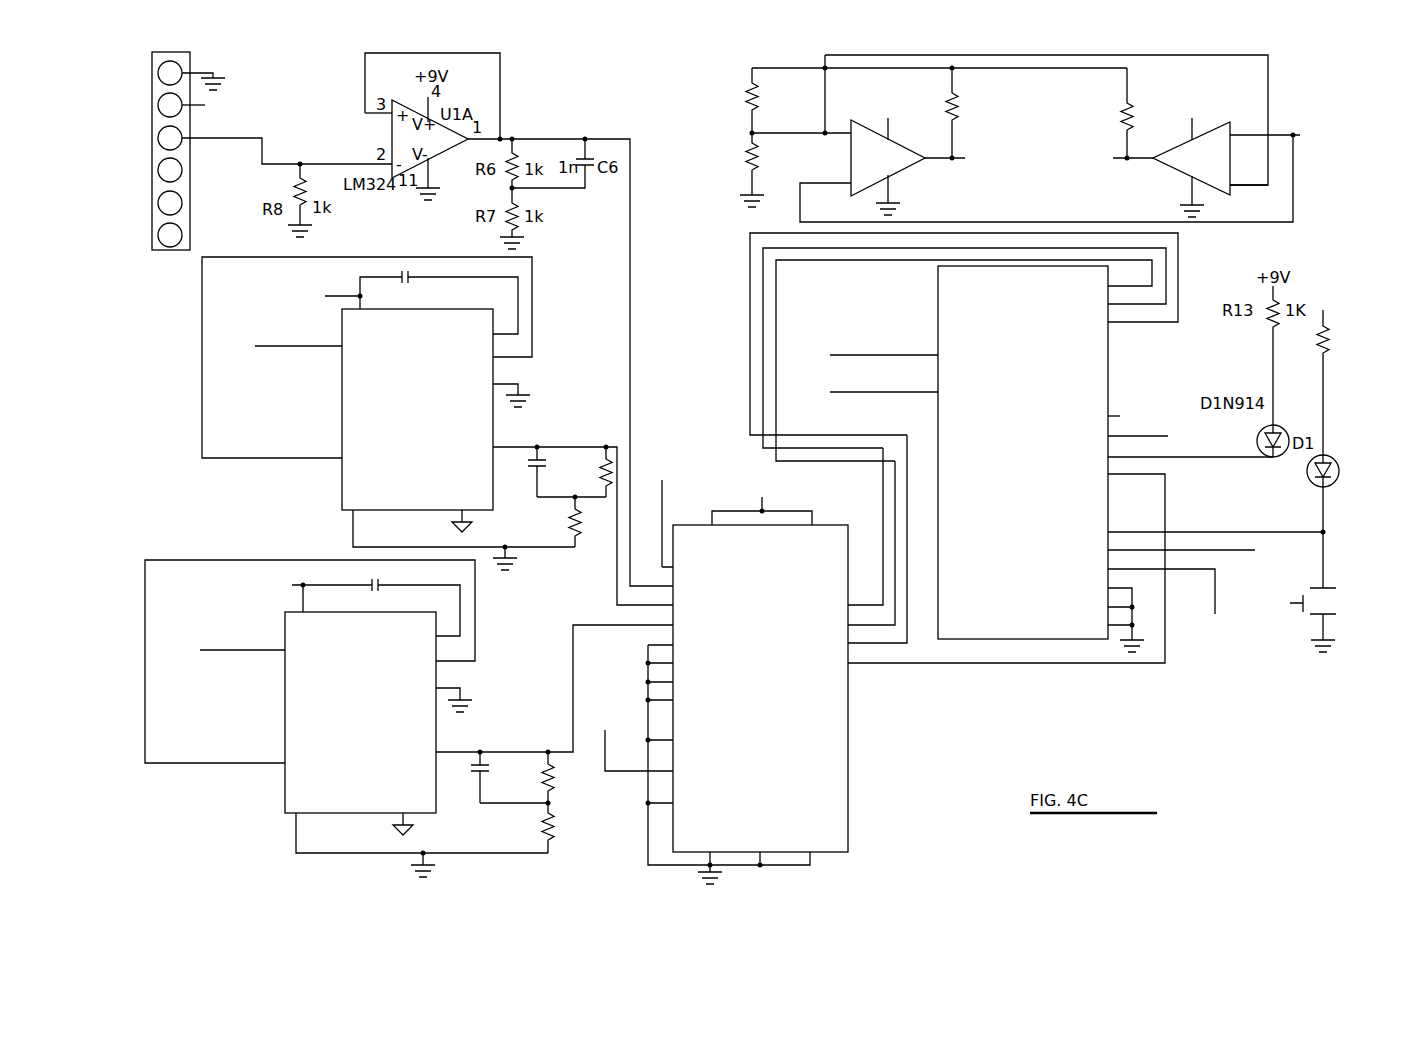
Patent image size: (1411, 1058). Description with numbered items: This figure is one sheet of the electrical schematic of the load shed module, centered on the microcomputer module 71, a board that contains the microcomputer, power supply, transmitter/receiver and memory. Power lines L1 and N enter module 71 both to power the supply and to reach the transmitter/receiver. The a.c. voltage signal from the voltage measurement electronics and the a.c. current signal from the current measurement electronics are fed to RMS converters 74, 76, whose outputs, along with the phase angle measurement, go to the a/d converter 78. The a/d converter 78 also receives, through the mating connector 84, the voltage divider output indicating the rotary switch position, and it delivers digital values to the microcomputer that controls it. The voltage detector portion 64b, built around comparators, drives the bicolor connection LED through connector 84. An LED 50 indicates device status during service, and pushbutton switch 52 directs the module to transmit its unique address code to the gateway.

The mating connector 84 is at (190, 60).
The voltage detector portion 64b is at (1283, 103).
The RMS converter 74 is at (497, 430).
The RMS converter 76 is at (436, 735).
The a/d converter 78 is at (848, 762).
The microcomputer module 71 is at (938, 313).
The LED 50 is at (1312, 483).
The pushbutton switch 52 is at (1312, 618).